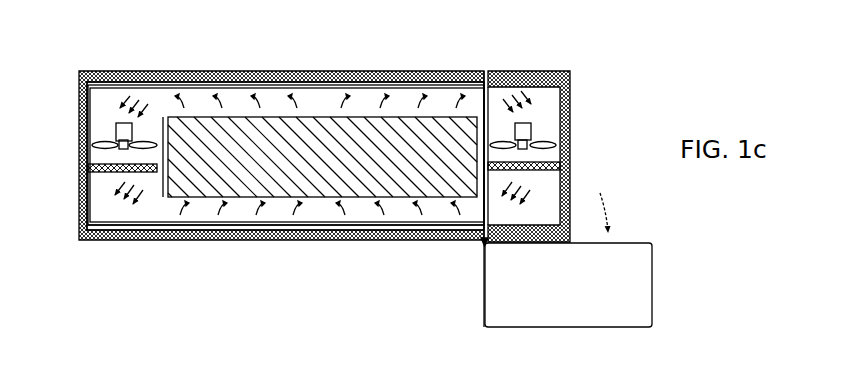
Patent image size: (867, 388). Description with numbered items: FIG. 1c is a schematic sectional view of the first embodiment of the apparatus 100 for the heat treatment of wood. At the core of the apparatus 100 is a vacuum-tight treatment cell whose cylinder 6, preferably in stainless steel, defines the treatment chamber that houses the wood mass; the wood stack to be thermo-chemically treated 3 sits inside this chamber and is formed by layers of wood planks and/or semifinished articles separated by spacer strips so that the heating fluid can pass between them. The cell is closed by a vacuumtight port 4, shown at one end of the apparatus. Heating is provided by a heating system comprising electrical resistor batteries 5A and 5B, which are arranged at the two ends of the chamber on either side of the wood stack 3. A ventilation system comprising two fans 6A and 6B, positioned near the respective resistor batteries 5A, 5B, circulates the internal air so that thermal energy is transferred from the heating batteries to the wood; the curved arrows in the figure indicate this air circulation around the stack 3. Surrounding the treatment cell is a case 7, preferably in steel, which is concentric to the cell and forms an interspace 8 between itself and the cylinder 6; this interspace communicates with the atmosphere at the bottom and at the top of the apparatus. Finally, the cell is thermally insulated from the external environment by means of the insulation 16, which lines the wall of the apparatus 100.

The apparatus 100 is at (127, 69).
The wood stack to be thermo-chemically treated 3 is at (372, 117).
The vacuumtight port 4 is at (568, 88).
The electrical resistor battery 5A is at (92, 168).
The electrical resistor battery 5B is at (568, 163).
The cylinder 6 is at (381, 88).
The fan 6A is at (116, 132).
The fan 6B is at (531, 134).
The case 7 is at (437, 73).
The interspace 8 is at (271, 84).
The insulation 16 is at (268, 240).